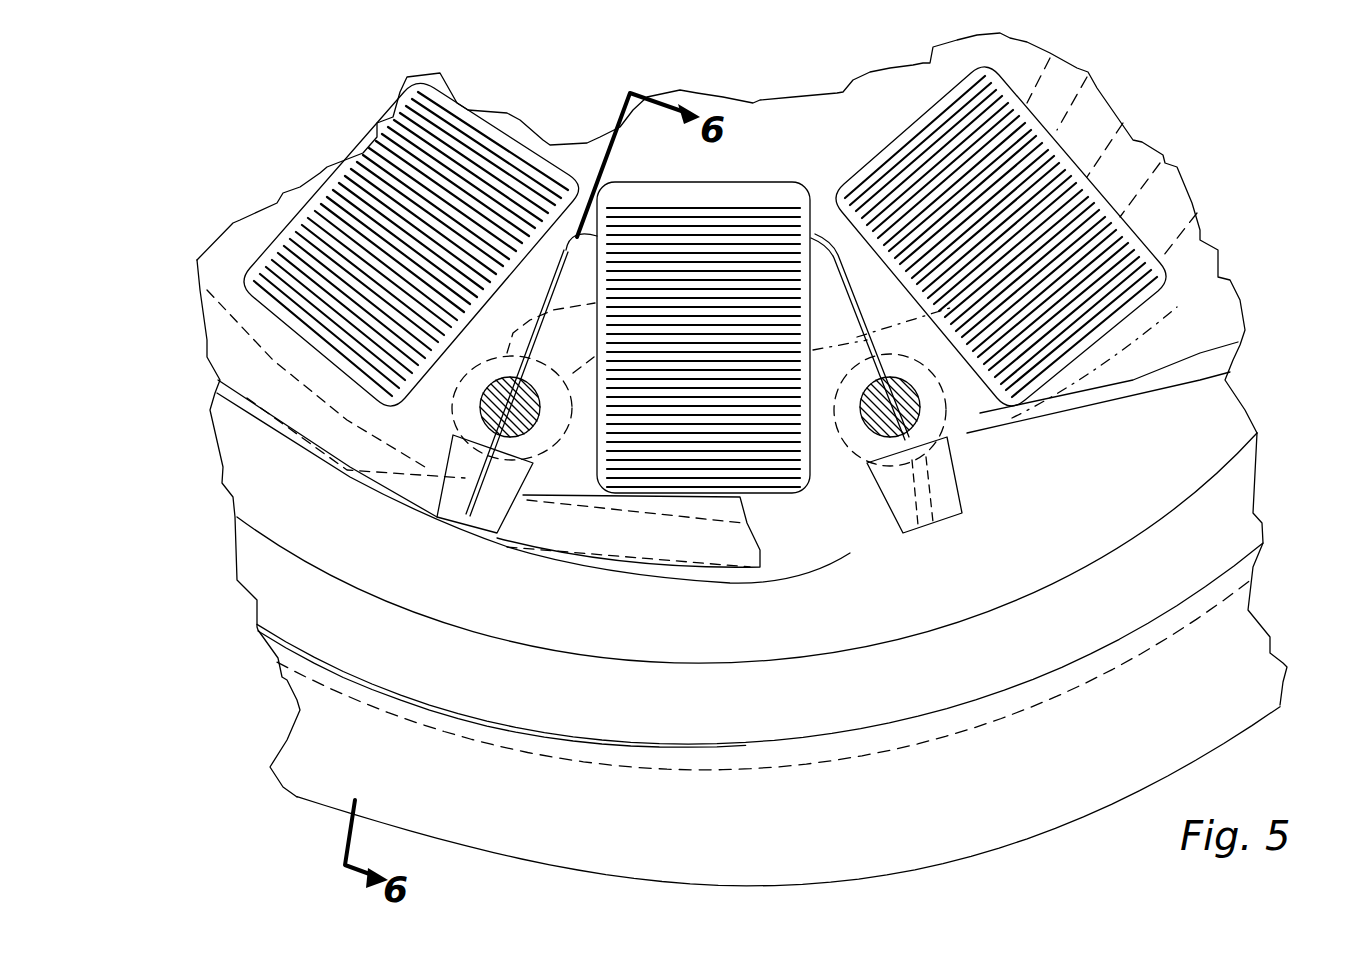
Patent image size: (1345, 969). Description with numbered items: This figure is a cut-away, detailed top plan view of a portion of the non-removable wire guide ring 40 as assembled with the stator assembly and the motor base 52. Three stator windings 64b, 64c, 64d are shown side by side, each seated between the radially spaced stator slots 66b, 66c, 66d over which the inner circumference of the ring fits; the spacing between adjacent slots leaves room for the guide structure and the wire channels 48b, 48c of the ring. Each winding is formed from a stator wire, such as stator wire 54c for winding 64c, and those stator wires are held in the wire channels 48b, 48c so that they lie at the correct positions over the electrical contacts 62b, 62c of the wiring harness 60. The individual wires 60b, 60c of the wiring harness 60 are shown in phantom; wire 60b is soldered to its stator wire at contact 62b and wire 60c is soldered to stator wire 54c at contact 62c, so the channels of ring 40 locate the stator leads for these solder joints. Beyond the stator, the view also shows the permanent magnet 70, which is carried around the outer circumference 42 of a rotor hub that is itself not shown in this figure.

The wire guide ring 40 is at (258, 546).
The outer circumference 42 is at (585, 665).
The wire channel 48b is at (457, 538).
The wire channel 48c is at (907, 510).
The motor base 52 is at (305, 645).
The stator wire 54c is at (865, 288).
The wiring harness 60 is at (1010, 428).
The individual wire 60b is at (827, 317).
The individual wire 60c is at (878, 430).
The electrical contact 62b is at (470, 412).
The electrical contact 62c is at (920, 432).
The stator winding 64b is at (300, 317).
The stator winding 64c is at (656, 450).
The stator winding 64d is at (1143, 285).
The stator slot 66b is at (213, 356).
The stator slot 66c is at (500, 556).
The stator slot 66d is at (1197, 338).
The permanent magnet 70 is at (648, 672).